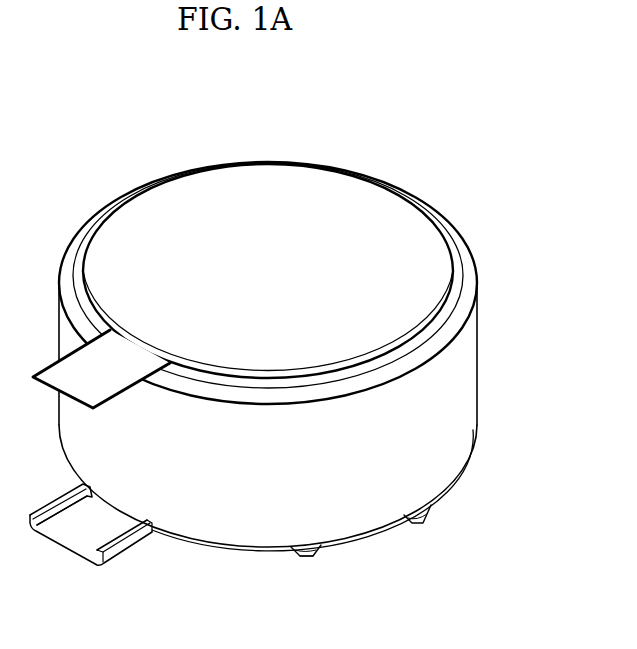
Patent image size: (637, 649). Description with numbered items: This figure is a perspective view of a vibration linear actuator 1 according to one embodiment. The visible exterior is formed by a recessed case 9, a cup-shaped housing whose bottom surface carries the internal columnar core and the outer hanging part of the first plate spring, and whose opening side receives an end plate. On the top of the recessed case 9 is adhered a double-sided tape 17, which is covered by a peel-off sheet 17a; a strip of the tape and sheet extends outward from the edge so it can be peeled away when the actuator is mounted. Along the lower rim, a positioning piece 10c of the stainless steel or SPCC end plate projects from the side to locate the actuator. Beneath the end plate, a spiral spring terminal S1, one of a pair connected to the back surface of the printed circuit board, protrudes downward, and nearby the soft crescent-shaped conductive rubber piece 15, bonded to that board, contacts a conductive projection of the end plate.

The vibration linear actuator 1 is at (63, 134).
The recessed case 9 is at (462, 405).
The double-sided tape 17 is at (425, 340).
The peel-off sheet 17a is at (202, 193).
The conductive rubber piece 15 is at (420, 521).
The spiral spring terminal S1 is at (312, 553).
The positioning piece 10c is at (77, 537).